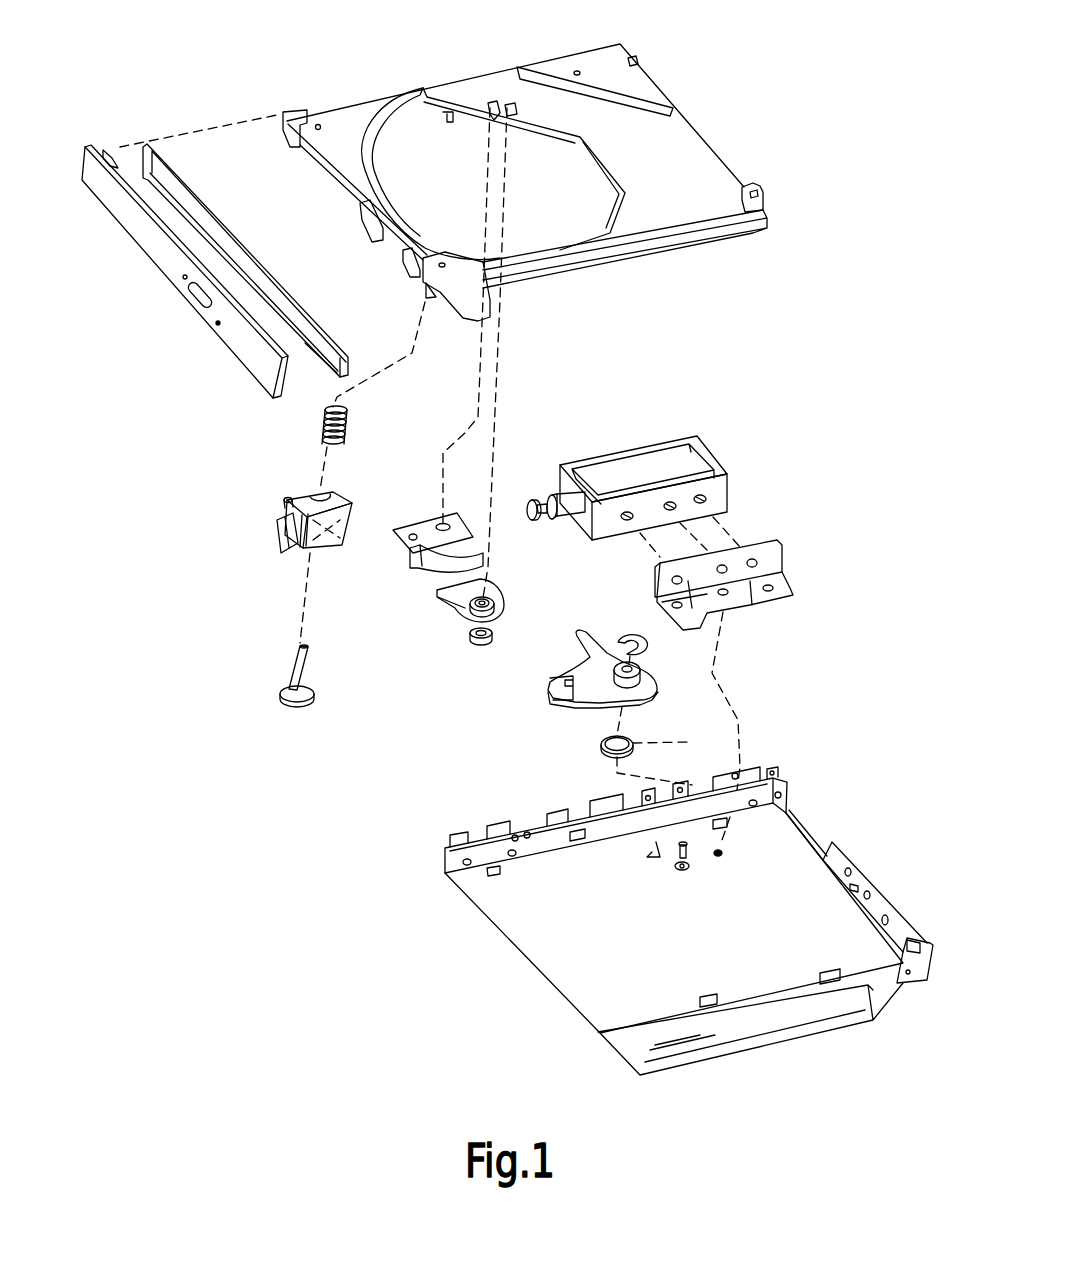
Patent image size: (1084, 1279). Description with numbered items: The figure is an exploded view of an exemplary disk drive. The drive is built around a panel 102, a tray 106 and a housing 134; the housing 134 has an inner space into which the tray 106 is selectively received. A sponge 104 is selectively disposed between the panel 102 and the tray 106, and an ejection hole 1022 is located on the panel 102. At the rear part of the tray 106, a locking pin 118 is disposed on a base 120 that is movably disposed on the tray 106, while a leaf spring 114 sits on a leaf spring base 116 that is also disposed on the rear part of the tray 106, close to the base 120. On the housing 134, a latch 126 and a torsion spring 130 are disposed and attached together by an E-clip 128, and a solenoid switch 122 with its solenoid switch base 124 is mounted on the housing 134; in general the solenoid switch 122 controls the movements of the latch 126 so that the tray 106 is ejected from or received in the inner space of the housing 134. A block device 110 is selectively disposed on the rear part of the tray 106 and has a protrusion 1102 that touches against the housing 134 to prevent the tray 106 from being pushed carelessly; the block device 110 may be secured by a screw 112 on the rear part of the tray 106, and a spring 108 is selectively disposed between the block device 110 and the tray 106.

The panel 102 is at (128, 225).
The ejection hole 1022 is at (218, 323).
The sponge 104 is at (220, 220).
The tray 106 is at (708, 152).
The spring 108 is at (320, 433).
The block device 110 is at (343, 520).
The protrusion 1102 is at (280, 530).
The screw 112 is at (290, 668).
The leaf spring 114 is at (418, 562).
The leaf spring base 116 is at (397, 540).
The locking pin 118 is at (470, 643).
The base 120 is at (457, 607).
The solenoid switch 122 is at (697, 463).
The solenoid switch base 124 is at (777, 557).
The latch 126 is at (653, 687).
The E-clip 128 is at (647, 645).
The torsion spring 130 is at (600, 743).
The housing 134 is at (533, 953).